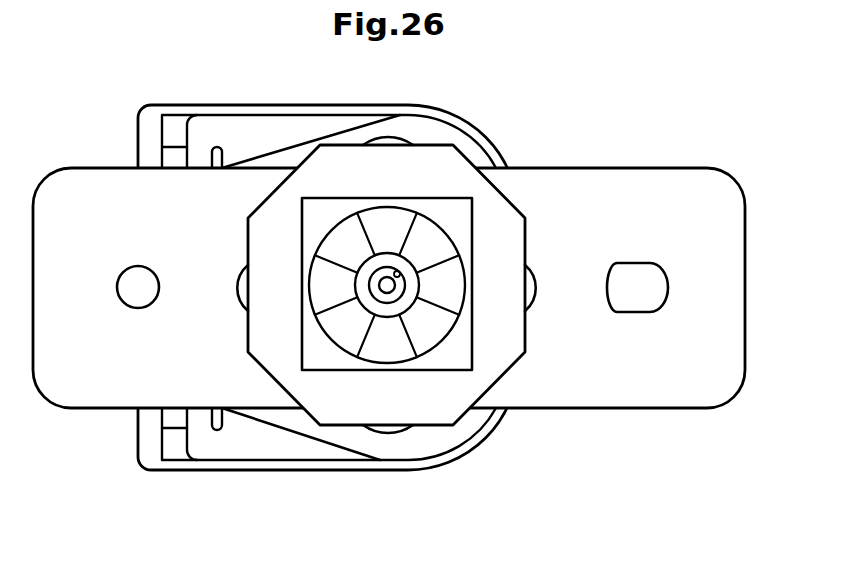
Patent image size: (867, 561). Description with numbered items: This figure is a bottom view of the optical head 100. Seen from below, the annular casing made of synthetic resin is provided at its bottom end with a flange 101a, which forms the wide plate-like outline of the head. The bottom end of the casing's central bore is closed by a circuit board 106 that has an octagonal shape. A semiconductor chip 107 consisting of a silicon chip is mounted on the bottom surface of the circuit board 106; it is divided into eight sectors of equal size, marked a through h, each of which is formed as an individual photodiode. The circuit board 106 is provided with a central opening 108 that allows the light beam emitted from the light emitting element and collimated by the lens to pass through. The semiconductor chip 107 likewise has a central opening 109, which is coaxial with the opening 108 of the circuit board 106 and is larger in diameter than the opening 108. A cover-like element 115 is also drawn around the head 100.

The optical head 100 is at (389, 268).
The flange 101a is at (692, 178).
The circuit board 106 is at (513, 343).
The semiconductor chip 107 is at (437, 340).
The central opening 108 is at (397, 297).
The central opening 109 is at (399, 273).
The cover 115 is at (460, 118).